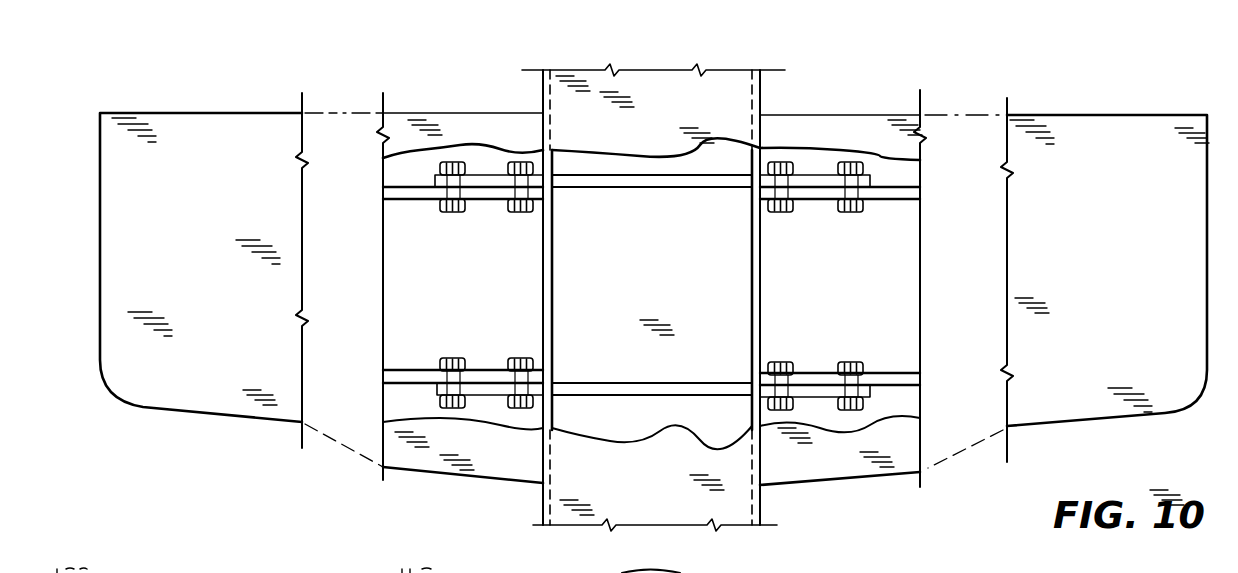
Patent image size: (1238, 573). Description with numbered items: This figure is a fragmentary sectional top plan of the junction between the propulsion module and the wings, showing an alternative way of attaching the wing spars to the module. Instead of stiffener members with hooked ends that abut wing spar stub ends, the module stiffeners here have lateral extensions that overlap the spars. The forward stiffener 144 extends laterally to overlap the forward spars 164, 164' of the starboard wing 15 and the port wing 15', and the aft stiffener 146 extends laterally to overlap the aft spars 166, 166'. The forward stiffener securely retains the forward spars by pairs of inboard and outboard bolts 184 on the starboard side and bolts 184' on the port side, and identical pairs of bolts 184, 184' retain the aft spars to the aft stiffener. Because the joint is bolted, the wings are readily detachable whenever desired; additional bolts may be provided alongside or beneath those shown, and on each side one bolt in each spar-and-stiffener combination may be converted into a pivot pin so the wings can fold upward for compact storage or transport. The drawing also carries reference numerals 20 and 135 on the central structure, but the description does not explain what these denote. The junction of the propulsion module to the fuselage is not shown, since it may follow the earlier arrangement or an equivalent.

The starboard wing 15 is at (241, 253).
The port wing 15' is at (1067, 288).
The column 20 is at (718, 100).
The column flanges 135 is at (752, 250).
The forward stiffener 144 is at (607, 387).
The aft stiffener 146 is at (627, 176).
The forward spar 164 is at (397, 437).
The forward spar 164' is at (904, 435).
The aft spar 166 is at (441, 265).
The aft spar 166' is at (882, 267).
The inboard and outboard bolts 184 is at (469, 301).
The inboard and outboard bolts 184' is at (825, 306).